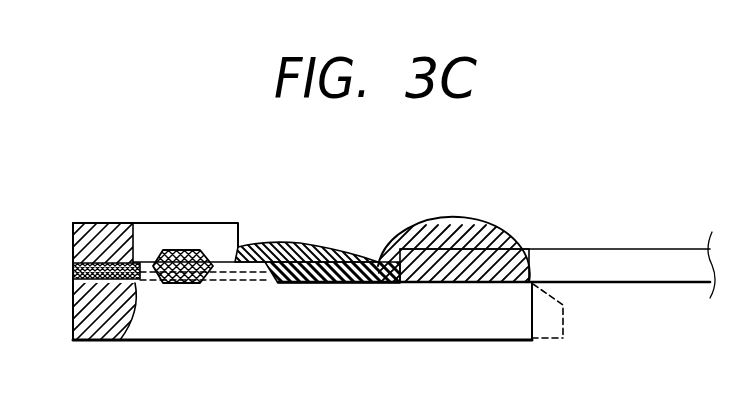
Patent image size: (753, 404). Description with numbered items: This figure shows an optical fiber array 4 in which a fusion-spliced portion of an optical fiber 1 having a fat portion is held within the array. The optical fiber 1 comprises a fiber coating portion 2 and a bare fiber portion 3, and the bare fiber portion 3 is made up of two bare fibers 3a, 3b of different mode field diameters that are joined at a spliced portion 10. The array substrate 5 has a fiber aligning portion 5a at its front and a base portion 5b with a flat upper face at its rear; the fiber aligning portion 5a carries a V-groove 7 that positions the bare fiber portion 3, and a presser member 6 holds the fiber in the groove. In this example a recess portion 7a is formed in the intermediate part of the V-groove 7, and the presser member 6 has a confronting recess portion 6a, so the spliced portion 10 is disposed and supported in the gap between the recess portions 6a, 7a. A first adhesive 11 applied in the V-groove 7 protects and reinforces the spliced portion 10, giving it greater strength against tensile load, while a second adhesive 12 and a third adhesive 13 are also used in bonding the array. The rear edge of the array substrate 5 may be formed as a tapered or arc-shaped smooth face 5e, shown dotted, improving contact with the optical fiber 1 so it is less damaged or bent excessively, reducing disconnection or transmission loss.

The optical fiber 1 is at (553, 239).
The fiber coating portion 2 is at (637, 262).
The bare fiber portion 3 is at (264, 150).
The bare fiber 3a is at (293, 242).
The bare fiber 3b is at (133, 262).
The optical fiber array 4 is at (265, 357).
The array substrate 5 is at (313, 341).
The fiber aligning portion 5a is at (97, 341).
The base portion 5b is at (392, 284).
The smooth face 5e is at (565, 305).
The presser member 6 is at (103, 236).
The recess portion 6a is at (192, 250).
The V-groove 7 is at (90, 288).
The recess portion 7a is at (172, 284).
The spliced portion 10 is at (196, 284).
The first adhesive 11 is at (73, 264).
The second adhesive 12 is at (437, 226).
The third adhesive 13 is at (328, 242).